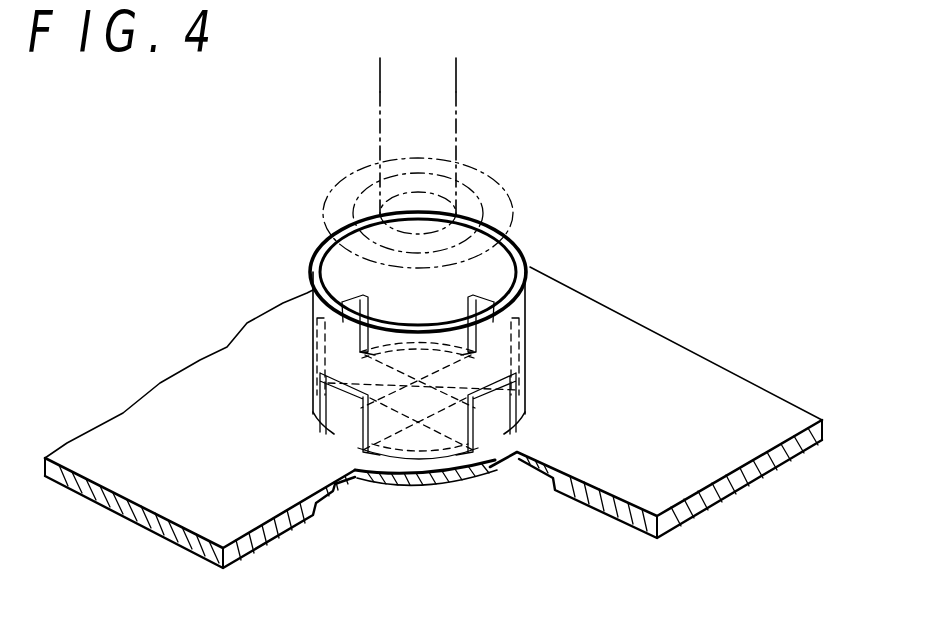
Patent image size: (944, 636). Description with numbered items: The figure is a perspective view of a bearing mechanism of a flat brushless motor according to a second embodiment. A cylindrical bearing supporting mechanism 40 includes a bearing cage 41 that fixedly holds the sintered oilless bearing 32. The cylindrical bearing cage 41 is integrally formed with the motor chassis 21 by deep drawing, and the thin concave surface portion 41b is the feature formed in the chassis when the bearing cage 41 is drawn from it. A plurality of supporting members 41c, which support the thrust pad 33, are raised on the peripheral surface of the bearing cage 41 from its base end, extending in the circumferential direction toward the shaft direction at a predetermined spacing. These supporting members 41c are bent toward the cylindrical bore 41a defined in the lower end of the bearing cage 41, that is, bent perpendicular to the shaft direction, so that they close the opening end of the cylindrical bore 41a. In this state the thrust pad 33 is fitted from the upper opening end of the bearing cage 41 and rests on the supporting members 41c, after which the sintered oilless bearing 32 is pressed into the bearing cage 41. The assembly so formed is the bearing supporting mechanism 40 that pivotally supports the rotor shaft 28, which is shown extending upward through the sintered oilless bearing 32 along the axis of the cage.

The motor chassis 21 is at (153, 492).
The rotor shaft 28 is at (458, 90).
The sintered oilless bearing 32 is at (333, 188).
The thrust pad 33 is at (313, 425).
The bearing supporting mechanism 40 is at (535, 258).
The bearing cage 41 is at (312, 253).
The cylindrical bore 41a is at (488, 443).
The thin concave surface portion 41b is at (353, 440).
The supporting members 41c is at (378, 488).